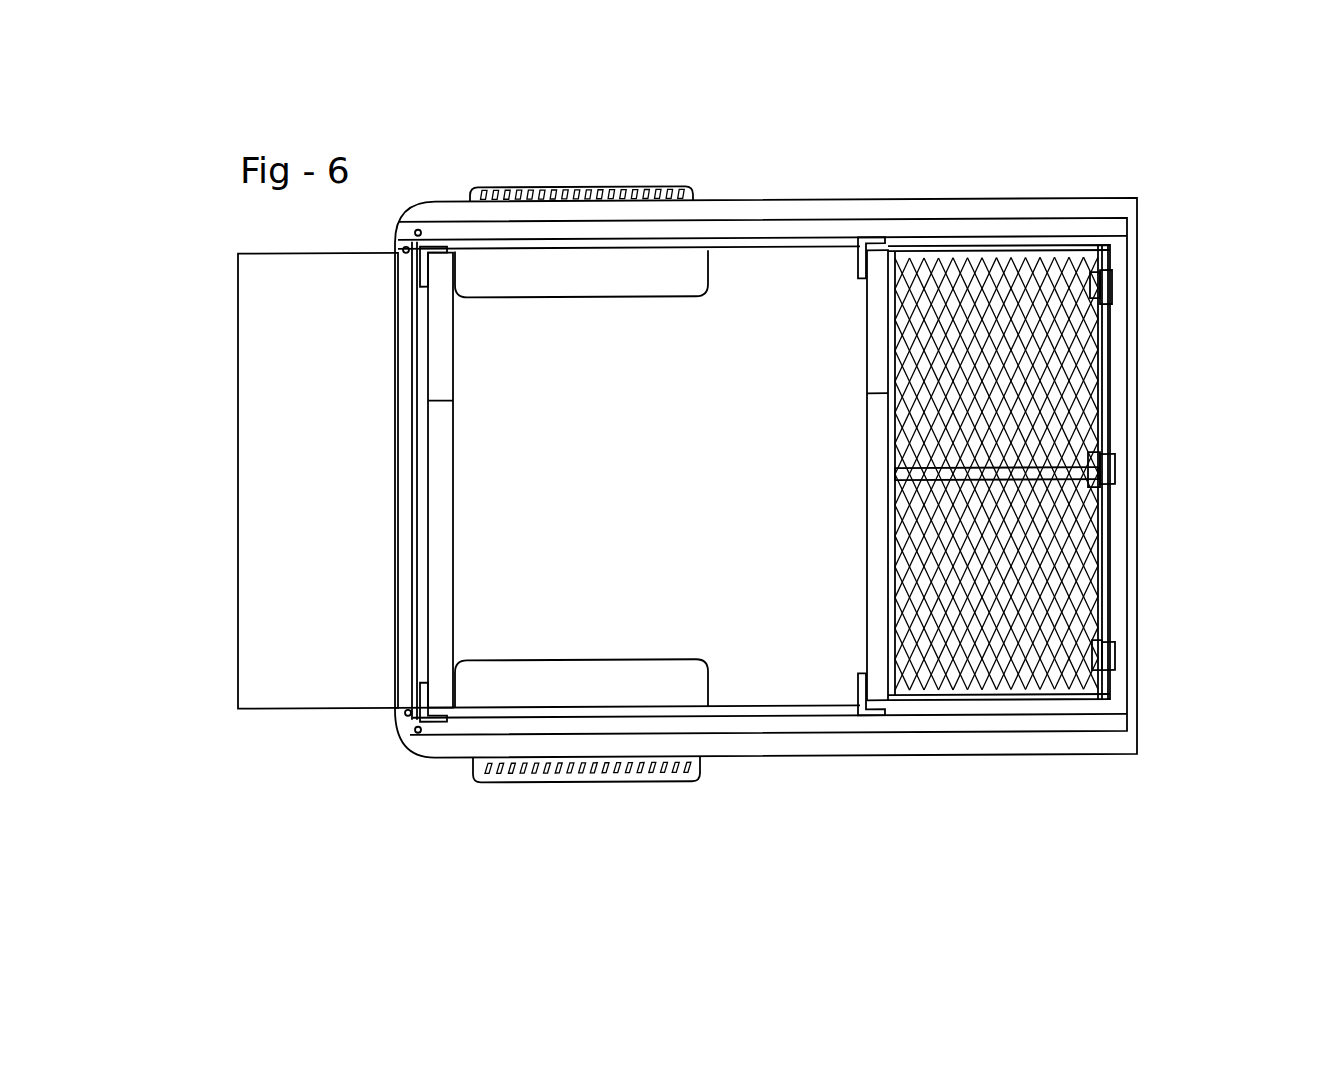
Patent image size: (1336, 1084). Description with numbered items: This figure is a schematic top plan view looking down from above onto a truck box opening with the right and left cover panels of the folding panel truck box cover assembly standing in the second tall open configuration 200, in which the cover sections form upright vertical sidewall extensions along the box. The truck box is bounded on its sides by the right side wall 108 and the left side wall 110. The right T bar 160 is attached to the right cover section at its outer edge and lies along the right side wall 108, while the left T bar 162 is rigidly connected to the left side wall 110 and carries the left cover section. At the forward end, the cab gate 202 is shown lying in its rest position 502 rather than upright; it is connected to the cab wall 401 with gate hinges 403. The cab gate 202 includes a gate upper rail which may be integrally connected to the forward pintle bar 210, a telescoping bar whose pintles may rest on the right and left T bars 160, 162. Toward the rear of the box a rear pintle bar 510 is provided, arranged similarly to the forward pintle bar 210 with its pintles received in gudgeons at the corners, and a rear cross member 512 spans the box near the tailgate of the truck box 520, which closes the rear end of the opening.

The second tall open configuration 200 is at (797, 156).
The left side wall 110 is at (835, 216).
The right side wall 108 is at (783, 744).
The right T bar 160 is at (820, 712).
The left T bar 162 is at (745, 247).
The cab gate 202 is at (1040, 404).
The forward pintle bar 210 is at (878, 357).
The cab wall 401 is at (1115, 558).
The gate hinges 403 is at (1112, 674).
The rest position 502 is at (1042, 174).
The rear pintle bar 510 is at (440, 502).
The rear cross member 512 is at (408, 634).
The tailgate of the truck box 520 is at (285, 492).